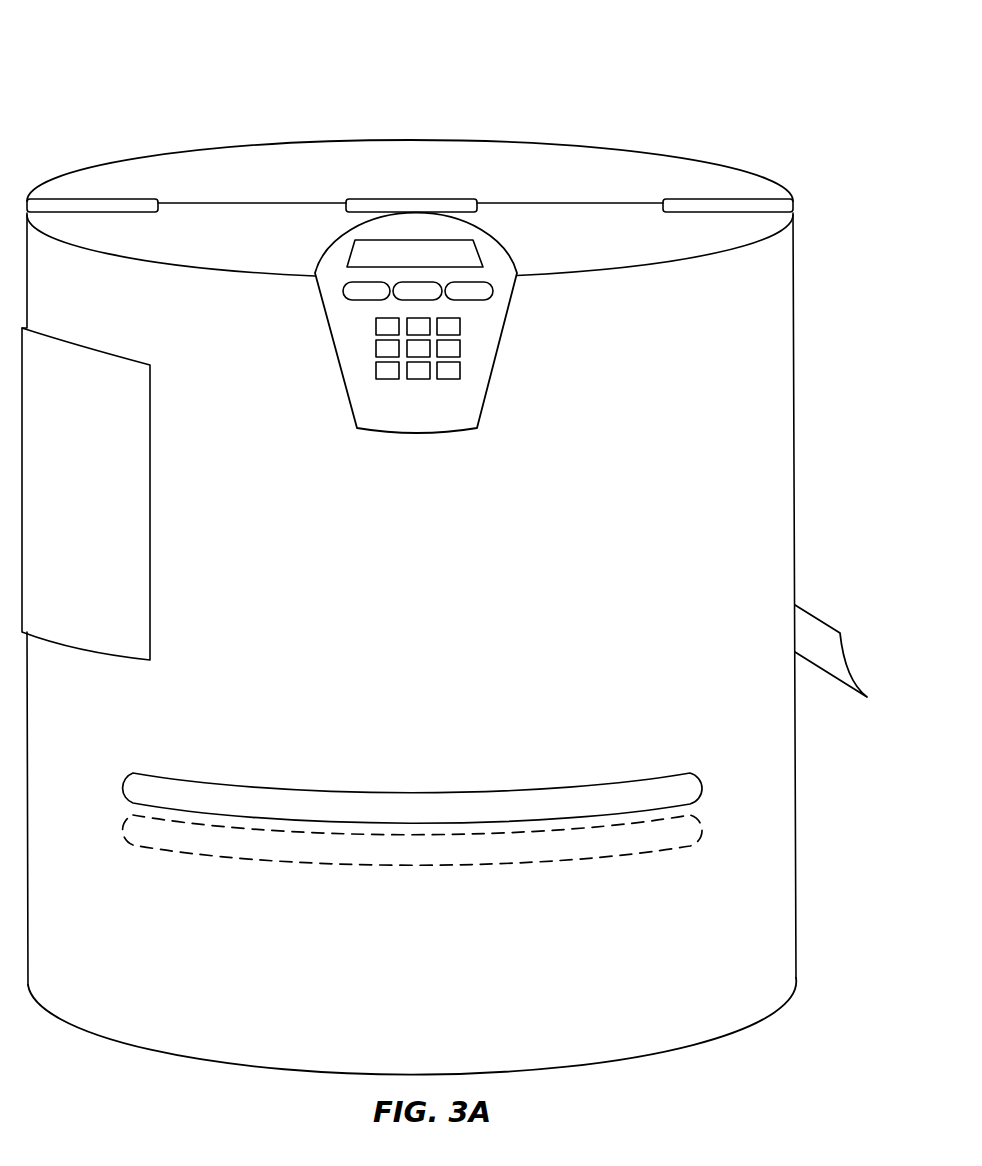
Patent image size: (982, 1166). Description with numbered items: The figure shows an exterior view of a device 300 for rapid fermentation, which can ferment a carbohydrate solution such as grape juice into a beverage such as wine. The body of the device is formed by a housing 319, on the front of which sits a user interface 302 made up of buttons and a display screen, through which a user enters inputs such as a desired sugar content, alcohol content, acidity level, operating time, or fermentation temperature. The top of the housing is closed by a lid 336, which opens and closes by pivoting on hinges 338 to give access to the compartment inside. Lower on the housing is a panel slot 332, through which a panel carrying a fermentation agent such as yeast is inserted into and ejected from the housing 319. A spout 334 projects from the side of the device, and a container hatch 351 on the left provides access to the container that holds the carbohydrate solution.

The device 300 is at (790, 119).
The user interface 302 is at (452, 412).
The housing 319 is at (226, 1053).
The panel slot 332 is at (177, 838).
The spout 334 is at (817, 640).
The lid 336 is at (232, 165).
The hinges 338 is at (697, 202).
The container hatch 351 is at (103, 513).